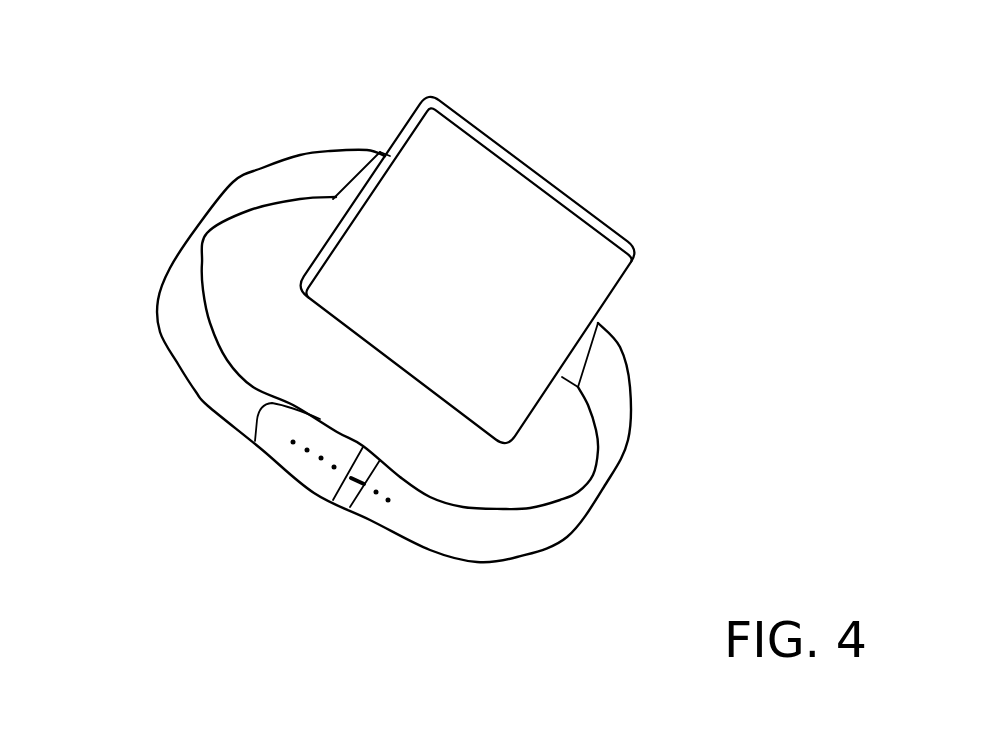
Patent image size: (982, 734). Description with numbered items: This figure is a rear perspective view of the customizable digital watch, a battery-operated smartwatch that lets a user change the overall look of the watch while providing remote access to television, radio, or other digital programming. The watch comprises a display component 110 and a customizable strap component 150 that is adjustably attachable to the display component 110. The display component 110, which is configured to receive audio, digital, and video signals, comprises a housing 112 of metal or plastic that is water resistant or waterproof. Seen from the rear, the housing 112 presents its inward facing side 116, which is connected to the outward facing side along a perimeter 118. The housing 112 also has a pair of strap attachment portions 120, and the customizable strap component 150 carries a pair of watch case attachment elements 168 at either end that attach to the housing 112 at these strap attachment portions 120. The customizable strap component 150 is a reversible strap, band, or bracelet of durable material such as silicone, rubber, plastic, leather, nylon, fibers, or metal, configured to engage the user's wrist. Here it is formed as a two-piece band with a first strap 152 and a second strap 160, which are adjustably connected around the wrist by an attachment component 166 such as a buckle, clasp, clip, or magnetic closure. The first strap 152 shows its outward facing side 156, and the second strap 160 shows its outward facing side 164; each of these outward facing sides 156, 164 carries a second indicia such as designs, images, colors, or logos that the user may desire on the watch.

The display component 110 is at (462, 100).
The housing 112 is at (520, 133).
The inward facing side 116 is at (487, 277).
The perimeter 118 is at (581, 200).
The strap attachment portions 120 is at (367, 155).
The customizable strap component 150 is at (177, 237).
The first strap 152 is at (233, 182).
The outward facing side 156 is at (252, 397).
The second strap 160 is at (586, 510).
The outward facing side 164 is at (530, 536).
The attachment component 166 is at (353, 476).
The watch case attachment elements 168 is at (337, 185).